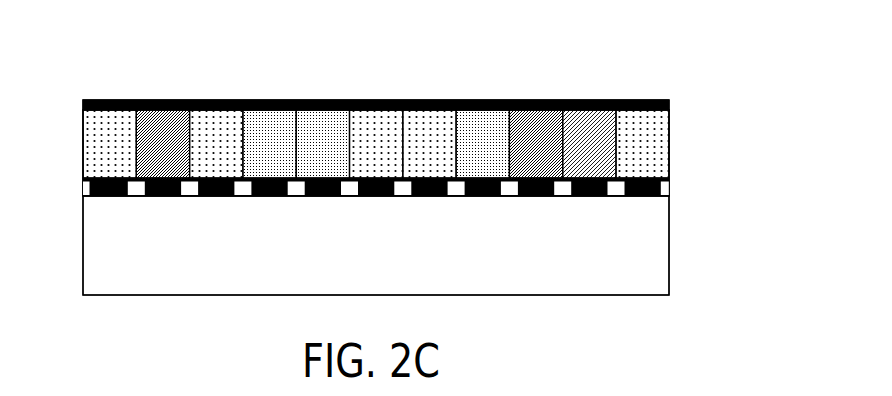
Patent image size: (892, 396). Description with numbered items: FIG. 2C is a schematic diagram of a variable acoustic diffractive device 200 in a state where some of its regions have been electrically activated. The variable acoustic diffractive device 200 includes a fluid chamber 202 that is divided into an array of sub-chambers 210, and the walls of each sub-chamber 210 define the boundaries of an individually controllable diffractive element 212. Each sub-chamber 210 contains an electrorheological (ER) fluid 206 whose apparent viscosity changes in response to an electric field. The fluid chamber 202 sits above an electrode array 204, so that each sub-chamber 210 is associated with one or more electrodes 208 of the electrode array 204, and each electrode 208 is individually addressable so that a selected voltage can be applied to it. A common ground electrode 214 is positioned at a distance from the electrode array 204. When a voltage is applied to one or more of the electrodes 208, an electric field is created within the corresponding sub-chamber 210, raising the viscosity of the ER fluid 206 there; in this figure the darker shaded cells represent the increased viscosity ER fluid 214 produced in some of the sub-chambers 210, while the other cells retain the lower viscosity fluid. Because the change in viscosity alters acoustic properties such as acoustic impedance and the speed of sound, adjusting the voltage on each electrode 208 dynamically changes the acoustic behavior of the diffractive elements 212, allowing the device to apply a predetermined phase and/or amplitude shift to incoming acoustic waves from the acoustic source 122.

The variable acoustic diffractive device 200 is at (666, 79).
The acoustic source 122 is at (670, 243).
The fluid chamber 202 is at (670, 138).
The electrode array 204 is at (70, 191).
The electrorheological fluid 206 is at (653, 113).
The electrode 208 is at (217, 196).
The sub-chamber 210 is at (101, 157).
The diffractive element 212 is at (108, 96).
The common ground electrode 214 is at (285, 100).